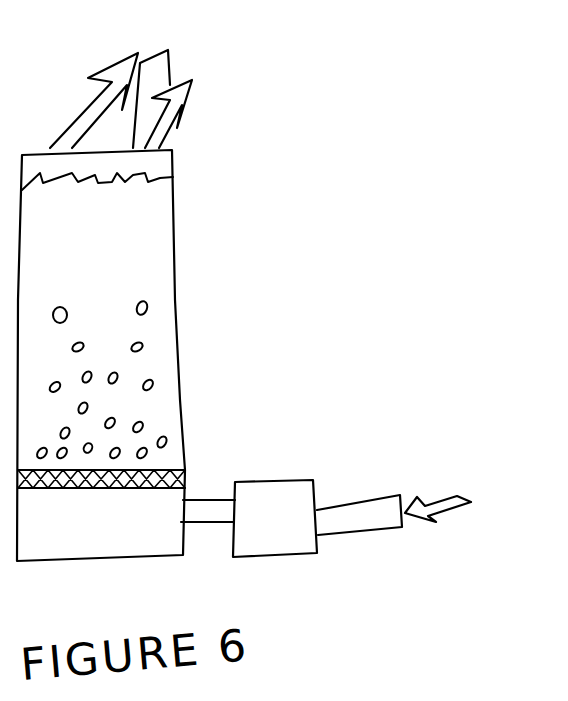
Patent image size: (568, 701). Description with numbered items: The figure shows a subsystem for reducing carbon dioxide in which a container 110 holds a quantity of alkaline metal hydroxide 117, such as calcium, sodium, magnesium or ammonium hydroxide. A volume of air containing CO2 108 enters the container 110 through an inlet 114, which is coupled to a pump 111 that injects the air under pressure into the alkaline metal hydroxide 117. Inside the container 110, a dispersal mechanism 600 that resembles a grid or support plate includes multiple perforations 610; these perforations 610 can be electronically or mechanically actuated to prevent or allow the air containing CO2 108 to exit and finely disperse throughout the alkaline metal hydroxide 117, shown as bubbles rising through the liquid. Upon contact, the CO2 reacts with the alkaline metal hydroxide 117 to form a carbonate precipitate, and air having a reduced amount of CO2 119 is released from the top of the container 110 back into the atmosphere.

The container 110 is at (68, 255).
The air having a reduced amount of CO2 119 is at (134, 84).
The alkaline metal hydroxide 117 is at (108, 180).
The air containing CO2 108 is at (132, 344).
The dispersal mechanism 600 is at (165, 468).
The perforations 610 is at (183, 470).
The pump 111 is at (287, 528).
The inlet 114 is at (360, 502).